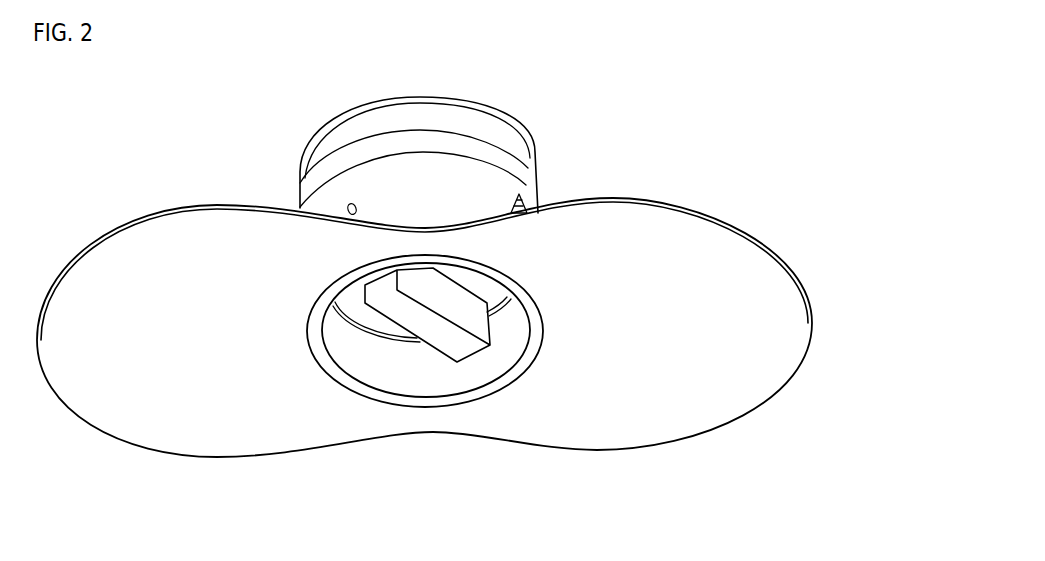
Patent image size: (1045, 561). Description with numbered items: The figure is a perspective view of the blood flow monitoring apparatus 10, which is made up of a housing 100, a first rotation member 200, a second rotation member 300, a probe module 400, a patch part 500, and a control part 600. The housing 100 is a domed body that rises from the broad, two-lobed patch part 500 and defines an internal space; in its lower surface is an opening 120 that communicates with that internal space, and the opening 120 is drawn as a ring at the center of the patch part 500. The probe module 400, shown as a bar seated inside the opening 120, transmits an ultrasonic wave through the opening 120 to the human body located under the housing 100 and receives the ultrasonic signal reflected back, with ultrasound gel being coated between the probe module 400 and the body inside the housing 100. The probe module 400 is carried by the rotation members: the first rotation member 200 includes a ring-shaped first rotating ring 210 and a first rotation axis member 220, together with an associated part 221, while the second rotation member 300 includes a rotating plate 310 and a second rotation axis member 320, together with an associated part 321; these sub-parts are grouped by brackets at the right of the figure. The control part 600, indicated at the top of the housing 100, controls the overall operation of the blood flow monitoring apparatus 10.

The blood flow monitoring apparatus 10 is at (610, 177).
The housing 100 is at (496, 201).
The opening 120 is at (378, 380).
The first rotation member 200 is at (892, 137).
The first rotating ring 210 is at (917, 142).
The first rotation axis member 220 is at (917, 208).
The first module part 221 is at (917, 268).
The second rotation member 300 is at (892, 318).
The rotating plate 310 is at (917, 323).
The second rotation axis member 320 is at (917, 390).
The second module part 321 is at (917, 450).
The probe module 400 is at (447, 333).
The patch part 500 is at (622, 253).
The control part 600 is at (532, 150).